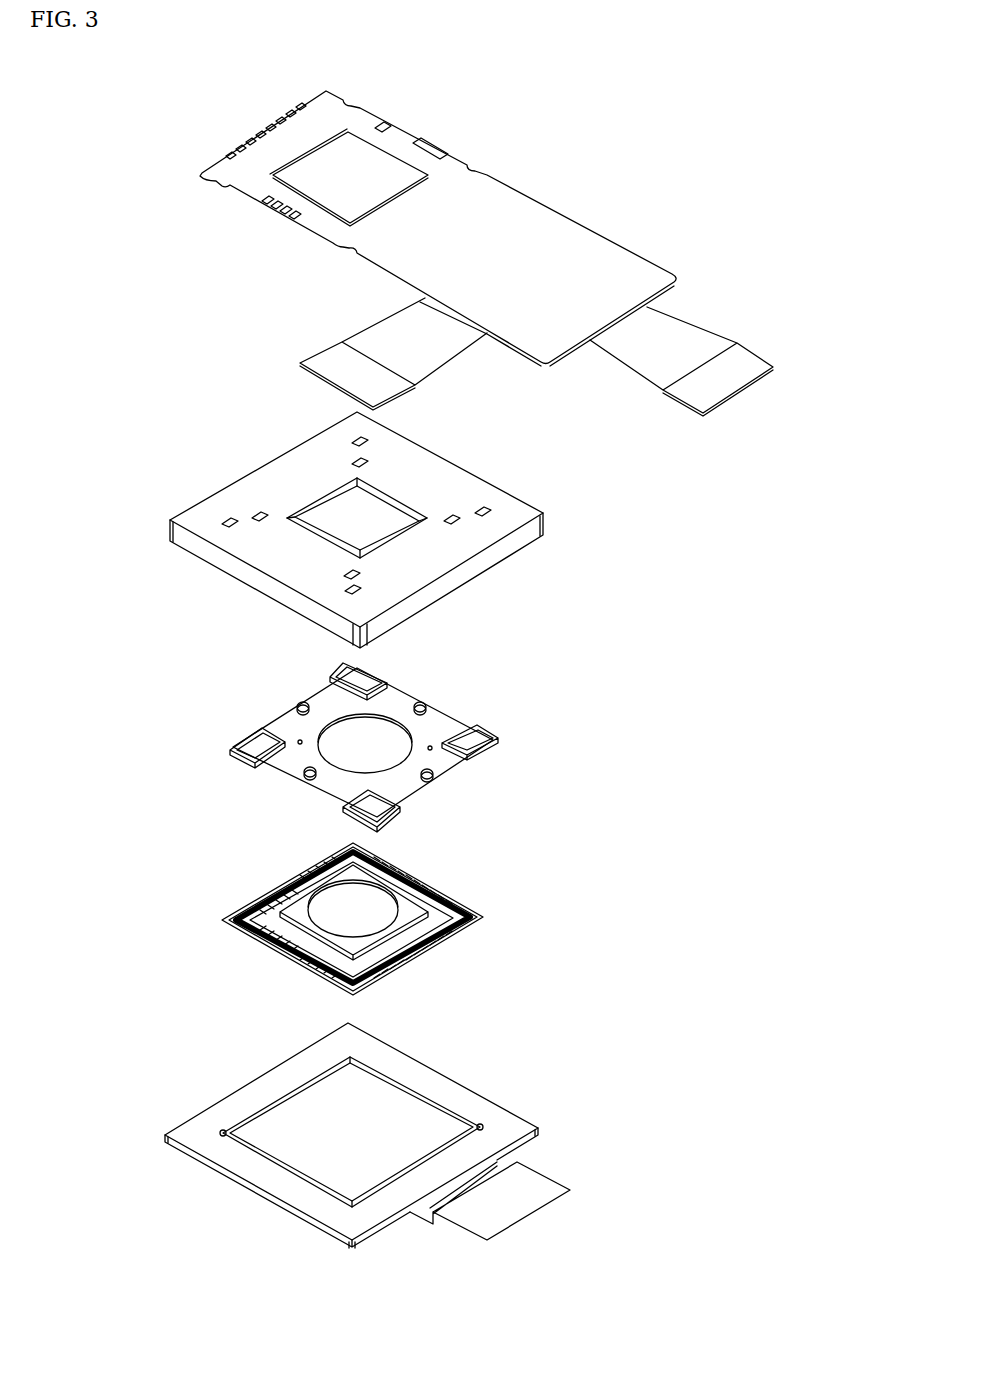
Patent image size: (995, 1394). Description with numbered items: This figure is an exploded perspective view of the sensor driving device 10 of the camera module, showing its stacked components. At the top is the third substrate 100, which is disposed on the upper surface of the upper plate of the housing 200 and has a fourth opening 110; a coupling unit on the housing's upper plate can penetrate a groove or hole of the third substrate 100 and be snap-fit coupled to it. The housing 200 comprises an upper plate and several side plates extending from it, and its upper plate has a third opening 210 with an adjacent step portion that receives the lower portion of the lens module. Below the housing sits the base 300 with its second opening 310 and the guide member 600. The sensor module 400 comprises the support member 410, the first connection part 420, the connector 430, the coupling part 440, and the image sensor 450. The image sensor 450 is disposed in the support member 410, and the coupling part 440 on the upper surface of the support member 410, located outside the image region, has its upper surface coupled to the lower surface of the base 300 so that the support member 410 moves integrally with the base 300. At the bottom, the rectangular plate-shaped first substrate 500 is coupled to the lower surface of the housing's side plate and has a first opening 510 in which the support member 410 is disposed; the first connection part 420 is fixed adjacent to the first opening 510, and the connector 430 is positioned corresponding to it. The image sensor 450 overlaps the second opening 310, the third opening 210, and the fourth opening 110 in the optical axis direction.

The camera module 10 is at (676, 82).
The third substrate 100 is at (672, 272).
The fourth opening 110 is at (356, 181).
The housing 200 is at (549, 528).
The third opening 210 is at (352, 526).
The base 300 is at (510, 735).
The second opening 310 is at (358, 750).
The sensor module 400 is at (481, 903).
The support member 410 is at (456, 930).
The first connection part 420 is at (475, 919).
The connector 430 is at (230, 927).
The coupling part 440 is at (301, 908).
The image sensor 450 is at (348, 918).
The first substrate 500 is at (527, 1112).
The first opening 510 is at (322, 1128).
The guide member 600 is at (425, 707).